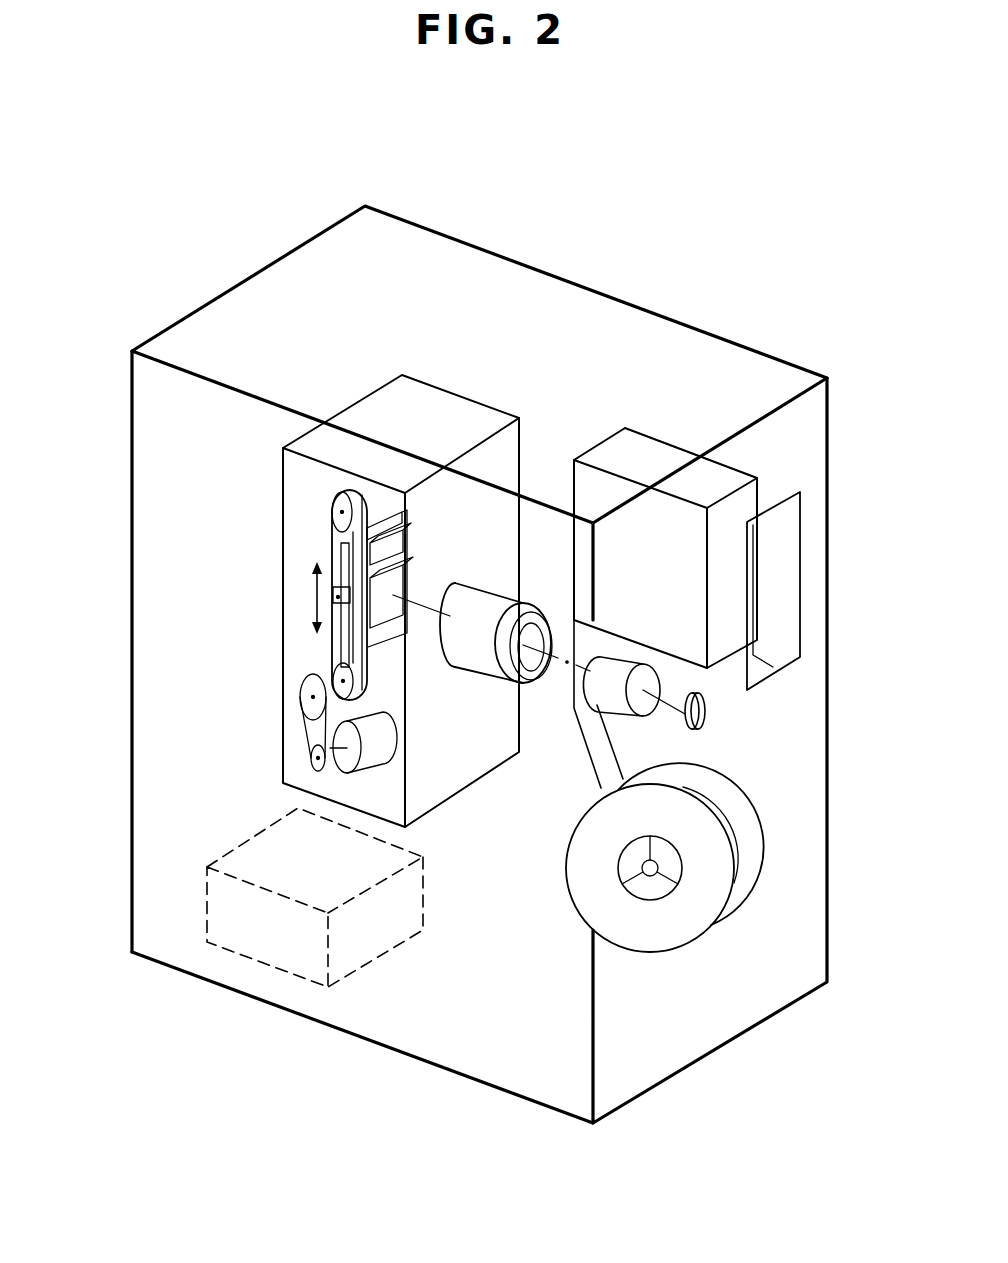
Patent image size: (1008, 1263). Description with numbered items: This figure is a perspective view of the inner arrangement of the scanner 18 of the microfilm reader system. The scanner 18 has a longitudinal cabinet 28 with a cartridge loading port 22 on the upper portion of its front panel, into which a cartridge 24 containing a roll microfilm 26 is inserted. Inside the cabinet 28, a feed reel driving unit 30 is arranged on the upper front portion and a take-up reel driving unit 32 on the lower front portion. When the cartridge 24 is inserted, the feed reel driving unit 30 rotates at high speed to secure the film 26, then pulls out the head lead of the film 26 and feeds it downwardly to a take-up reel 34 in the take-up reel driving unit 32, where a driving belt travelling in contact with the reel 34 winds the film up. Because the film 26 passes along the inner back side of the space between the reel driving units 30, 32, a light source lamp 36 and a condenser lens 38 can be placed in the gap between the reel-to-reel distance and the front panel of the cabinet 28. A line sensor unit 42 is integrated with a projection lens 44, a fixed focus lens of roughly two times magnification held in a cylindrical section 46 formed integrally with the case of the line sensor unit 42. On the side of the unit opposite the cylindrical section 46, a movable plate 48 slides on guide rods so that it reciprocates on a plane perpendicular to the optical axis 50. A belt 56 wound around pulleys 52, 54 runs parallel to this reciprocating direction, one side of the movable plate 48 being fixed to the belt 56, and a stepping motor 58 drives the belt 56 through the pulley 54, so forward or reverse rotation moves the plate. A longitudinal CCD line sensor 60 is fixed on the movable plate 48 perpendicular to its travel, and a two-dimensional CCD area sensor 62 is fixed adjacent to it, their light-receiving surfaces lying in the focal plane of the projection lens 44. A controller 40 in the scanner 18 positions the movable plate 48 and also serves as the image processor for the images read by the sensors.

The scanner 18 is at (390, 1049).
The cartridge loading port 22 is at (773, 660).
The cartridge 24 is at (690, 451).
The microfilm 26 is at (592, 768).
The cabinet 28 is at (236, 990).
The feed reel driving unit 30 is at (650, 430).
The take-up reel driving unit 32 is at (576, 936).
The take-up reel 34 is at (665, 952).
The light source lamp 36 is at (703, 718).
The condenser lens 38 is at (662, 679).
The controller 40 is at (207, 882).
The line sensor unit 42 is at (487, 407).
The projection lens 44 is at (523, 602).
The cylindrical section 46 is at (547, 623).
The movable plate 48 is at (362, 493).
The optical axis 50 is at (554, 662).
The pulley 52 is at (333, 513).
The pulley 54 is at (340, 680).
The belt 56 is at (335, 545).
The stepping motor 58 is at (367, 772).
The CCD line sensor 60 is at (383, 522).
The CCD area sensor 62 is at (400, 583).